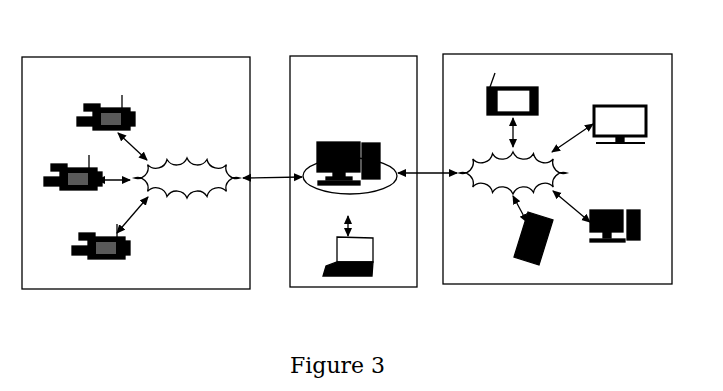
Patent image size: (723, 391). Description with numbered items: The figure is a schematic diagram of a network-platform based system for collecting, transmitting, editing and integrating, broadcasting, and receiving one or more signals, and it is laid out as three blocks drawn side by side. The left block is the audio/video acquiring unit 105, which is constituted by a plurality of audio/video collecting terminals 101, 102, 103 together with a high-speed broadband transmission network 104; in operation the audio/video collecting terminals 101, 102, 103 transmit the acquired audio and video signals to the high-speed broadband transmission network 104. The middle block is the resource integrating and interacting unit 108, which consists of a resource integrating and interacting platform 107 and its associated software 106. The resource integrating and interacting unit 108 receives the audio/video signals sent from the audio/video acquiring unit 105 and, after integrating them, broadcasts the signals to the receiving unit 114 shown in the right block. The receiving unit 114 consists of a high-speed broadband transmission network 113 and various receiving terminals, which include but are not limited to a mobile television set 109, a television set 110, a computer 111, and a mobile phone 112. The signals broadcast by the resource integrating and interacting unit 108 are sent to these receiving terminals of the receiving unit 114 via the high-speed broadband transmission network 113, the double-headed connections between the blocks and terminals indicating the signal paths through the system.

The audio/video collecting terminal 101 is at (87, 104).
The audio/video collecting terminal 102 is at (60, 165).
The audio/video collecting terminal 103 is at (86, 235).
The high-speed broadband transmission network 104 is at (200, 156).
The audio/video acquiring unit 105 is at (148, 57).
The associated software 106 is at (371, 240).
The resource integrating and interacting platform 107 is at (376, 138).
The resource integrating and interacting unit 108 is at (370, 56).
The mobile television set 109 is at (537, 88).
The television set 110 is at (630, 105).
The computer 111 is at (626, 210).
The mobile phone 112 is at (541, 253).
The high-speed broadband transmission network 113 is at (486, 152).
The receiving unit 114 is at (578, 54).